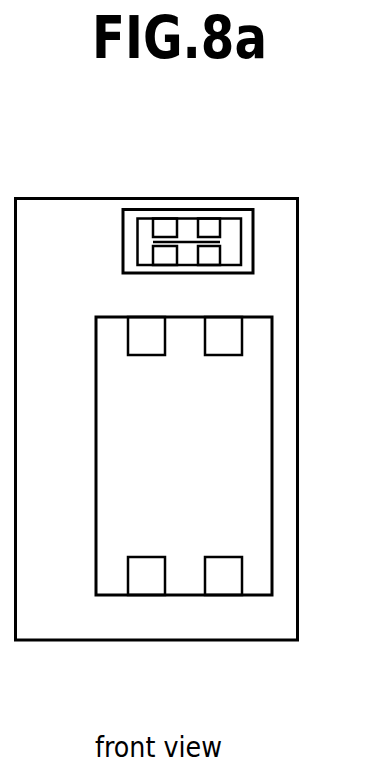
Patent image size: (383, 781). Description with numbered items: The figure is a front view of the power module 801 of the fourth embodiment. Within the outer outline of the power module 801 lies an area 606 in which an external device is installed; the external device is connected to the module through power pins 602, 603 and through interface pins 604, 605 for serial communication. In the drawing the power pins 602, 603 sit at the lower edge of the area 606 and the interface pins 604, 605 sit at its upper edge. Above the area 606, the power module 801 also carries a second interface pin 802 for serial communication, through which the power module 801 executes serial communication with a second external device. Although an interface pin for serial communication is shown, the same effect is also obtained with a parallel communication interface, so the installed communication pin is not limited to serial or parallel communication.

The power module 801 is at (299, 294).
The second interface pin 802 is at (123, 247).
The area 606 is at (96, 483).
The power pin 602 is at (145, 598).
The power pin 603 is at (217, 598).
The interface pin 604 is at (142, 358).
The interface pin 605 is at (222, 358).